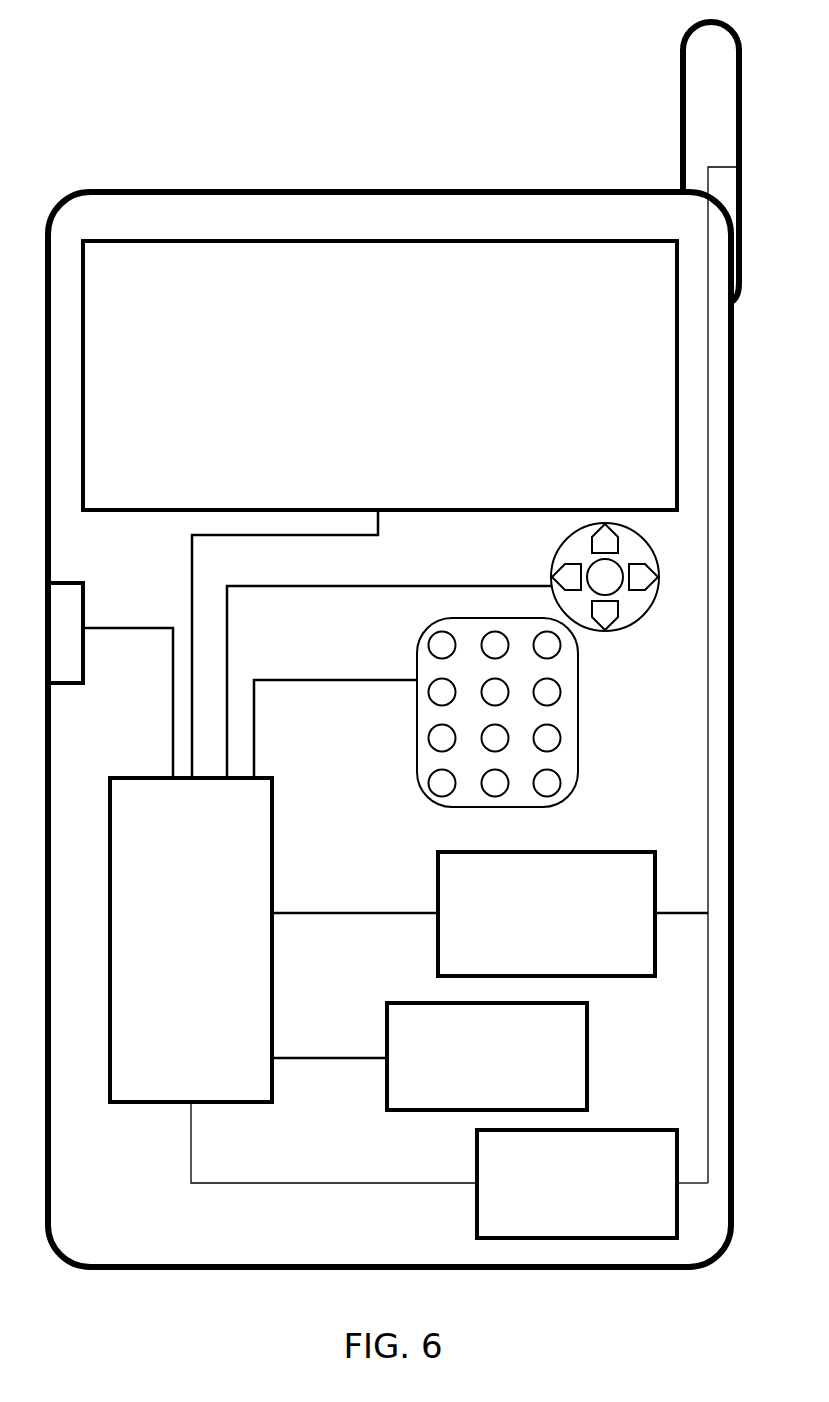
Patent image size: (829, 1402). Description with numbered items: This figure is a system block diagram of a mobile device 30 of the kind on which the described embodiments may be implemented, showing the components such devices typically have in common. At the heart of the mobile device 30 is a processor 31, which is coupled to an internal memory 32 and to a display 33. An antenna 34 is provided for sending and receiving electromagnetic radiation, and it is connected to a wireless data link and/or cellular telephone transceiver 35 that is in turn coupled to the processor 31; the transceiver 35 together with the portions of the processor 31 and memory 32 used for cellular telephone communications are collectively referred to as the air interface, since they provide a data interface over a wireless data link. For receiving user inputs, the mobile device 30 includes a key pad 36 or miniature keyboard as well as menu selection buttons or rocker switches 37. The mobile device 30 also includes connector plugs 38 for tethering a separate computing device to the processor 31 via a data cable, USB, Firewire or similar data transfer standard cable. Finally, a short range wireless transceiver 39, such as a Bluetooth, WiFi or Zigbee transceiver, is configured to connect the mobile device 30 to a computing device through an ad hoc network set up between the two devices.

The mobile device 30 is at (332, 191).
The processor 31 is at (177, 953).
The internal memory 32 is at (473, 1068).
The display 33 is at (347, 377).
The antenna 34 is at (683, 49).
The cellular telephone transceiver 35 is at (532, 926).
The key pad 36 is at (578, 761).
The rocker switches 37 is at (605, 631).
The connector plugs 38 is at (85, 597).
The short range wireless transceiver 39 is at (563, 1196).